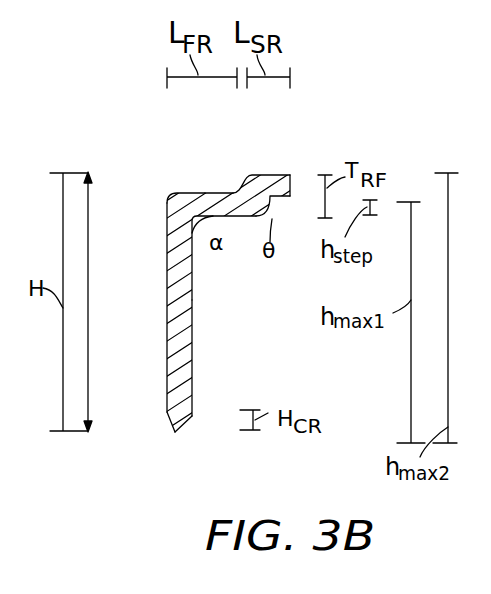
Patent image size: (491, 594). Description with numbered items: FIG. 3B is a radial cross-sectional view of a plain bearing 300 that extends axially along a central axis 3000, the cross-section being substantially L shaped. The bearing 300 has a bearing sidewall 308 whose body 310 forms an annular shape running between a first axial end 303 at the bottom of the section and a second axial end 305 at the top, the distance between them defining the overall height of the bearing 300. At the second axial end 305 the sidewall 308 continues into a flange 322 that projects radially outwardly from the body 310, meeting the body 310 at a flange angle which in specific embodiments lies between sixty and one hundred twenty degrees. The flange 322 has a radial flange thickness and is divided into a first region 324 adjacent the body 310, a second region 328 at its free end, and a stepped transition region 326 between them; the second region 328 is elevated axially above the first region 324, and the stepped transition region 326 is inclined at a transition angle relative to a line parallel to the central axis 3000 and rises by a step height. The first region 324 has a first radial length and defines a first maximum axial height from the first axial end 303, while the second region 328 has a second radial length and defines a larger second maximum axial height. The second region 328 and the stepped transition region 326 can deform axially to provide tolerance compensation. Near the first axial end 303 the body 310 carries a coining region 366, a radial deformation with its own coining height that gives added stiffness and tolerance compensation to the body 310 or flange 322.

The bearing 300 is at (319, 157).
The central axis 3000 is at (88, 202).
The first axial end 303 is at (170, 425).
The second axial end 305 is at (290, 174).
The bearing sidewall 308 is at (193, 295).
The body 310 is at (193, 340).
The flange 322 is at (198, 192).
The first region 324 is at (212, 193).
The stepped transition region 326 is at (262, 203).
The second region 328 is at (273, 175).
The coining region 366 is at (183, 425).